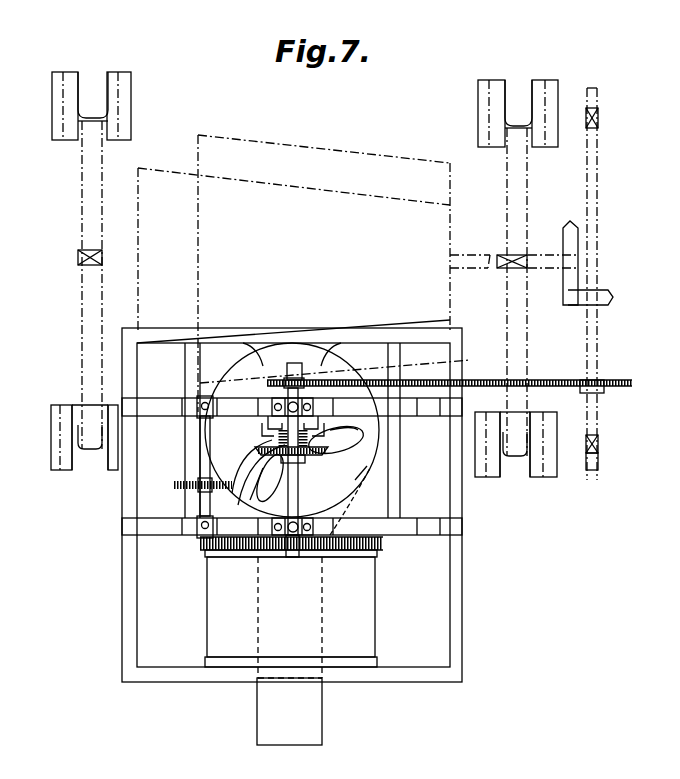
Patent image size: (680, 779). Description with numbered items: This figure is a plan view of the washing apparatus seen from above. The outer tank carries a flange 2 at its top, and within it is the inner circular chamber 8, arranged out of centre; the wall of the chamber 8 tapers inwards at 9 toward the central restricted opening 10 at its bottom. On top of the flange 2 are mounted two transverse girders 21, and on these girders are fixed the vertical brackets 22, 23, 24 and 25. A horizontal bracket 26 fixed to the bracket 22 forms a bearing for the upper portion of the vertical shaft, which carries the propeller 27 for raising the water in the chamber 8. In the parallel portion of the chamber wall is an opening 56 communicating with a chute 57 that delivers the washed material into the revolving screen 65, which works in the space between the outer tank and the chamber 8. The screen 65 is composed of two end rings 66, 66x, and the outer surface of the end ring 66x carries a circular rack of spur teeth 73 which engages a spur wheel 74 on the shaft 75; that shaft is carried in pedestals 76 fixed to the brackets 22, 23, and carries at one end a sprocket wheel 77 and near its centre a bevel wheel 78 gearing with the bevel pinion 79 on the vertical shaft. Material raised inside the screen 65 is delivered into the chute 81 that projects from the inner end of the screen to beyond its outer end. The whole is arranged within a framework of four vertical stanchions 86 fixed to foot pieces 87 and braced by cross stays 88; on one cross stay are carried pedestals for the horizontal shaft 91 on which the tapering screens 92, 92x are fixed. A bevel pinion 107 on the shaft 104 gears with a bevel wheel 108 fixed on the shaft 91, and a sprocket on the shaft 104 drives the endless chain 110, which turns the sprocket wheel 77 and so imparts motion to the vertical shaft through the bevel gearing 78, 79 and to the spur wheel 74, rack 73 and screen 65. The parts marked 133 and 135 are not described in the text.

The flange 2 is at (292, 333).
The inner circular chamber 8 is at (238, 503).
The tapered wall portion 9 is at (251, 466).
The restricted opening 10 is at (312, 466).
The transverse girders 21 is at (292, 466).
The vertical bracket 22 is at (268, 421).
The vertical bracket 23 is at (334, 520).
The vertical bracket 24 is at (200, 414).
The vertical bracket 25 is at (196, 538).
The horizontal bracket 26 is at (268, 432).
The propeller 27 is at (308, 463).
The opening 56 is at (355, 471).
The chute 57 is at (270, 617).
The screen 65 is at (291, 607).
The end ring 66 is at (226, 660).
The end ring 66x is at (291, 564).
The circular rack 73 is at (383, 546).
The spur wheel 74 is at (303, 557).
The shaft 75 is at (288, 372).
The pedestals 76 is at (272, 404).
The sprocket wheel 77 is at (301, 372).
The bevel wheel 78 is at (249, 485).
The bevel pinion 79 is at (316, 437).
The chute 81 is at (320, 625).
The vertical stanchions 86 is at (108, 122).
The foot pieces 87 is at (68, 80).
The cross stays 88 is at (97, 226).
The horizontal shaft 91 is at (113, 266).
The tapering screen 92 is at (297, 146).
The tapering screen 92x is at (146, 355).
The shaft 104 is at (590, 170).
The bevel pinion 107 is at (602, 291).
The bevel wheel 108 is at (563, 237).
The endless chain 110 is at (416, 386).
The pinion 133 is at (172, 485).
The pinion shaft 135 is at (200, 506).